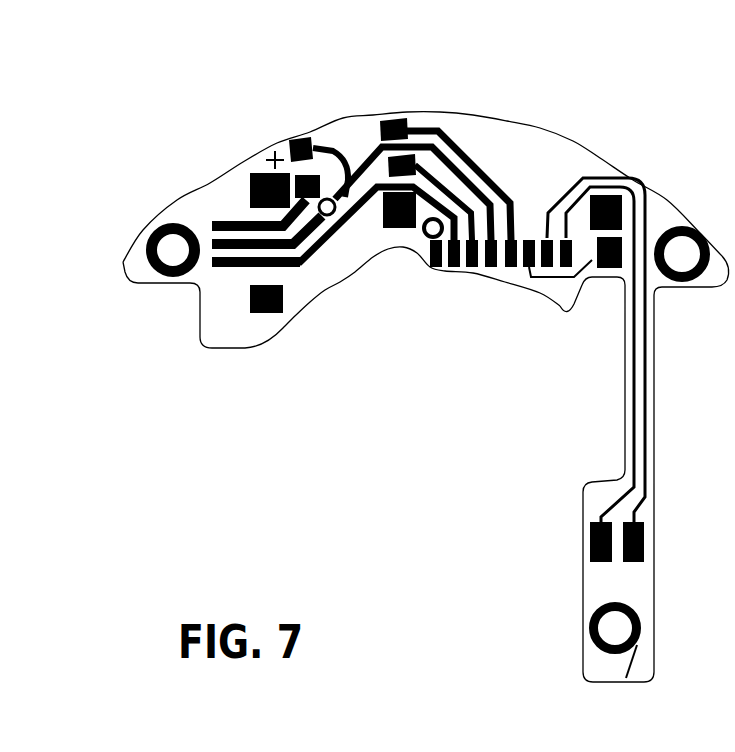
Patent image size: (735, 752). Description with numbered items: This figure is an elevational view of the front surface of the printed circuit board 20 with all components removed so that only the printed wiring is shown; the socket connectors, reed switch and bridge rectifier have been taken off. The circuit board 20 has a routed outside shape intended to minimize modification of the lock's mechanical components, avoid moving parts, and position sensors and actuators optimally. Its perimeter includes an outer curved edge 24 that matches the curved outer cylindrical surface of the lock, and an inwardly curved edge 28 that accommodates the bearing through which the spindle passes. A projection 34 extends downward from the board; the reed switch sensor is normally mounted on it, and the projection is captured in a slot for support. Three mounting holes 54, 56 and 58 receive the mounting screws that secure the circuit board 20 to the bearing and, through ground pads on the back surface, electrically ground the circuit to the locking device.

The printed circuit board 20 is at (572, 115).
The outer curved edge 24 is at (343, 118).
The inwardly curved edge 28 is at (343, 284).
The projection 34 is at (643, 601).
The mounting hole 54 is at (170, 246).
The mounting hole 56 is at (680, 263).
The mounting hole 58 is at (590, 628).